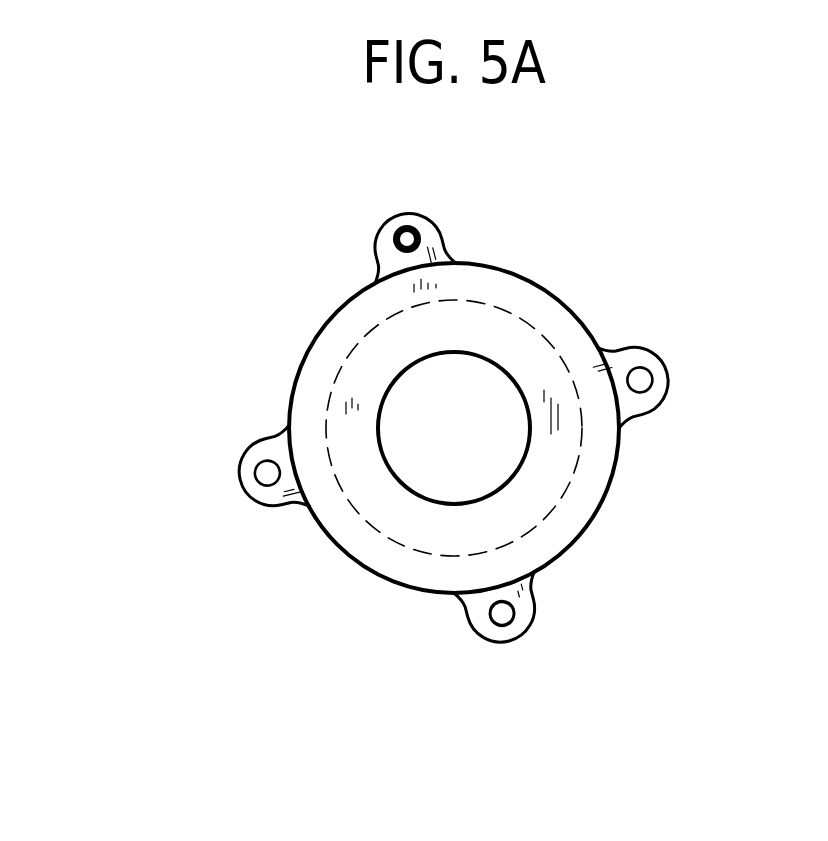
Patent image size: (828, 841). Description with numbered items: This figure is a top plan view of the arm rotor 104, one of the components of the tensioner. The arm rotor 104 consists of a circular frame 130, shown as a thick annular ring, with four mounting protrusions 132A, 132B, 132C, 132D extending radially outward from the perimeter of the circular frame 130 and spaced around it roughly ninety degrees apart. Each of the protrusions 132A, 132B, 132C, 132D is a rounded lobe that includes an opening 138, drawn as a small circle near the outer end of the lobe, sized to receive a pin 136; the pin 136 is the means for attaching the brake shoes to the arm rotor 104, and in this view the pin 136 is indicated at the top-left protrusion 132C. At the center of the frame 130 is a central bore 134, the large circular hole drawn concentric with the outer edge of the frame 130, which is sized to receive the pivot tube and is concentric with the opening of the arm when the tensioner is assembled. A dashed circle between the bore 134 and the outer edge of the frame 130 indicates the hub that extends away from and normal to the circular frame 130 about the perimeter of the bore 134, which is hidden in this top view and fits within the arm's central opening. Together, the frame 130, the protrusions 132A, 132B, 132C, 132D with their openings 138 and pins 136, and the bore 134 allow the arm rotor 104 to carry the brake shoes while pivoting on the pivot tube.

The arm rotor 104 is at (316, 570).
The circular frame 130 is at (597, 478).
The mounting protrusion 132A is at (531, 630).
The mounting protrusion 132B is at (246, 497).
The mounting protrusion 132C is at (374, 238).
The mounting protrusion 132D is at (668, 361).
The central bore 134 is at (490, 458).
The pin 136 is at (420, 233).
The opening 138 is at (494, 614).